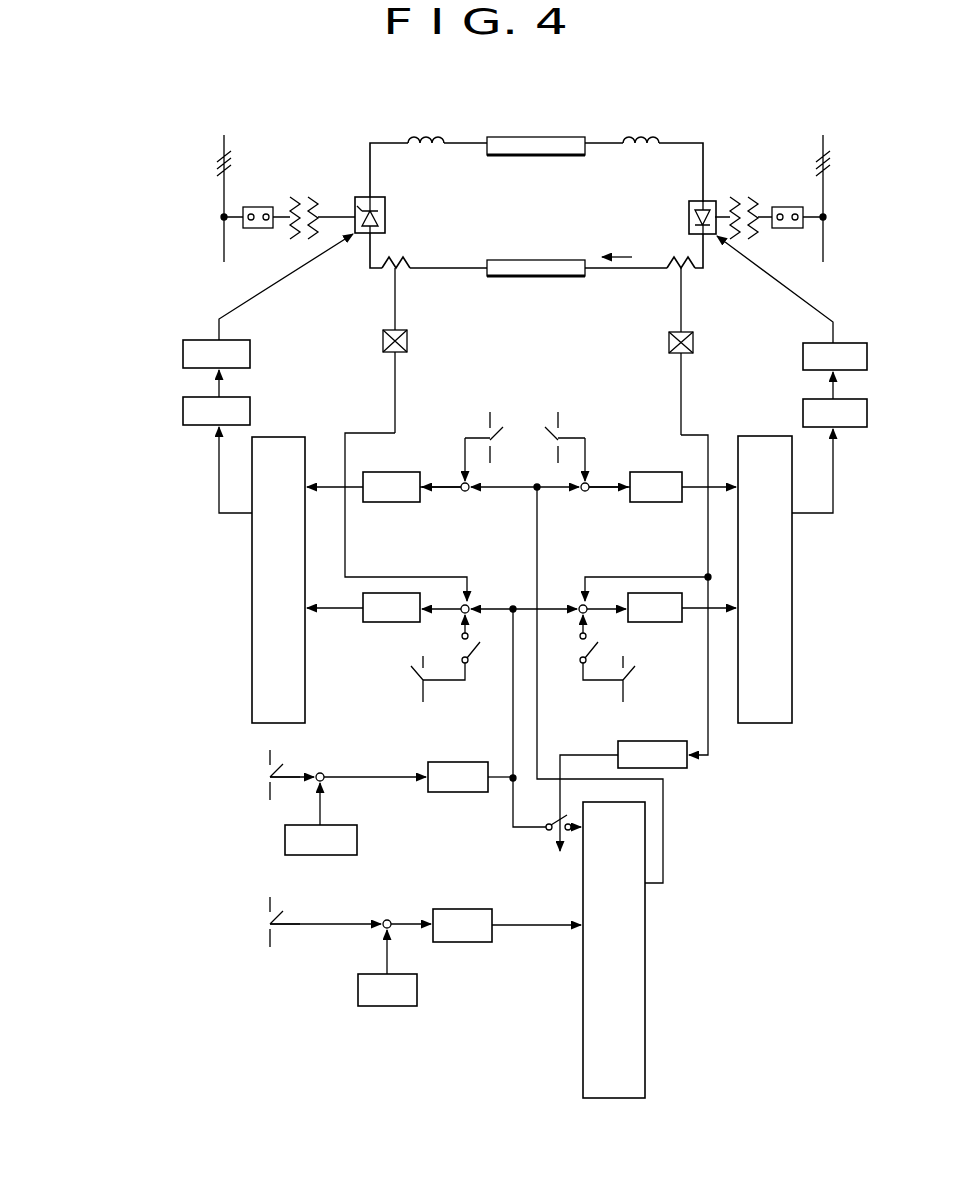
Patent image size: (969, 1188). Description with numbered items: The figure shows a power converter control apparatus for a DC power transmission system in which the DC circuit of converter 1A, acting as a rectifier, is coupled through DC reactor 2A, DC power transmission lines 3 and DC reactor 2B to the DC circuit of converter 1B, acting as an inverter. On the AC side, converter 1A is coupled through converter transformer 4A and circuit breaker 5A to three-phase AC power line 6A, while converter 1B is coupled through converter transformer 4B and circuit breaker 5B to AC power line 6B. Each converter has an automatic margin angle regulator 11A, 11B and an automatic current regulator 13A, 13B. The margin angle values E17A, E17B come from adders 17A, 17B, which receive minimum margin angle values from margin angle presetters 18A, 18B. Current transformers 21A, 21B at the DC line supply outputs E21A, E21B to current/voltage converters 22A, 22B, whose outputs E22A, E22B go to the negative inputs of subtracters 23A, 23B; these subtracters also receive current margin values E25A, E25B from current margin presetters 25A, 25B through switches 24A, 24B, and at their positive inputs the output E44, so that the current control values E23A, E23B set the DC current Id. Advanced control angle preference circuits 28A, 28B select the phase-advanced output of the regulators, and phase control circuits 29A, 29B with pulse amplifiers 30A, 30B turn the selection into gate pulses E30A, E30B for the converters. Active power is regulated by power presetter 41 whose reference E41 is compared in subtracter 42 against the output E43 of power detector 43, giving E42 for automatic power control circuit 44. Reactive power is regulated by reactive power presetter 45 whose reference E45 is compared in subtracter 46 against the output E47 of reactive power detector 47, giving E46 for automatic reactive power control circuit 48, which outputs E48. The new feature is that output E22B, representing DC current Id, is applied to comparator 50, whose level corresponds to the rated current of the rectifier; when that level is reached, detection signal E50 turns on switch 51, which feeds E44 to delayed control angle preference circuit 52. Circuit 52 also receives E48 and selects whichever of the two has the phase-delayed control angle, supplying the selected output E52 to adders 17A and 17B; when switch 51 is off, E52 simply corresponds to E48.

The converter 1A is at (386, 204).
The converter 1B is at (700, 205).
The DC reactor 2A is at (420, 138).
The DC reactor 2B is at (640, 138).
The DC power transmission lines 3 is at (552, 137).
The converter transformer 4A is at (306, 198).
The converter transformer 4B is at (742, 198).
The circuit breaker 5A is at (256, 207).
The circuit breaker 5B is at (786, 207).
The 3-phase AC power line 6A is at (233, 160).
The 3-phase AC power line 6B is at (816, 150).
The automatic margin angle regulator 11A is at (395, 471).
The automatic margin angle regulator 11B is at (648, 471).
The automatic current regulator 13A is at (372, 623).
The automatic current regulator 13B is at (670, 623).
The adder 17A is at (465, 505).
The adder 17B is at (585, 505).
The margin angle presetter 18A is at (492, 412).
The margin angle presetter 18B is at (560, 412).
The current transformer 21A is at (398, 258).
The current transformer 21B is at (685, 245).
The current/voltage converter 22A is at (407, 344).
The current/voltage converter 22B is at (667, 345).
The subtracter 23A is at (470, 585).
The subtracter 23B is at (580, 588).
The switch 24A is at (478, 670).
The switch 24B is at (570, 652).
The current margin presetter 25A is at (415, 680).
The current margin presetter 25B is at (632, 682).
The advanced control angle preference circuit 28A is at (251, 661).
The advanced control angle preference circuit 28B is at (792, 678).
The phase control circuit 29A is at (250, 412).
The phase control circuit 29B is at (803, 413).
The pulse amplifier 30A is at (250, 355).
The pulse amplifier 30B is at (803, 356).
The power presetter 41 is at (278, 773).
The subtracter 42 is at (322, 772).
The power detector 43 is at (357, 838).
The automatic power control circuit 44 is at (456, 762).
The reactive power presetter 45 is at (276, 921).
The subtracter 46 is at (389, 920).
The reactive power detector 47 is at (417, 990).
The automatic reactive power control circuit 48 is at (478, 909).
The comparator 50 is at (678, 770).
The switch 51 is at (548, 835).
The delayed control angle preference circuit 52 is at (645, 955).
The DC current Id is at (623, 246).
The margin angle value E17A is at (432, 497).
The margin angle value E17B is at (612, 497).
The current transformer output E21A is at (397, 300).
The current transformer output E21B is at (679, 300).
The current/voltage converter output E22A is at (349, 546).
The current/voltage converter output E22B is at (710, 715).
The current control value E23A is at (437, 623).
The current control value E23B is at (611, 623).
The current margin value E25A is at (433, 687).
The current margin value E25B is at (602, 687).
The gate pulses E30A is at (305, 277).
The gate pulses E30B is at (814, 283).
The active power reference E41 is at (278, 782).
The subtracter output E42 is at (378, 776).
The power detector output E43 is at (322, 806).
The automatic power control circuit output E44 is at (509, 790).
The reactive power reference E45 is at (312, 928).
The subtracter output E46 is at (425, 915).
The reactive power detector output E47 is at (390, 958).
The automatic reactive power control circuit output E48 is at (525, 935).
The detection signal E50 is at (582, 754).
The selected output E52 is at (665, 862).